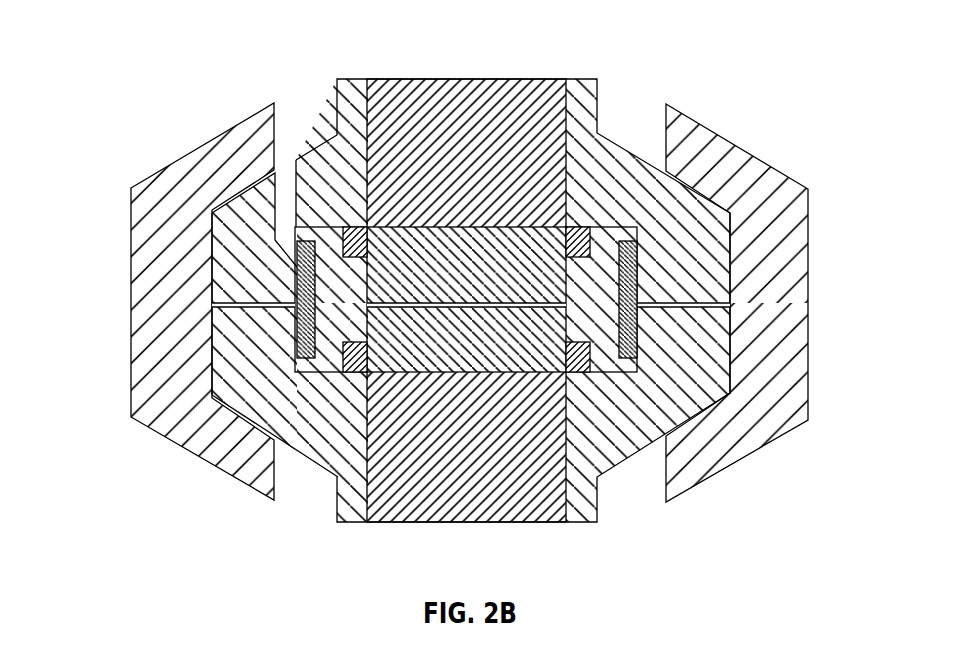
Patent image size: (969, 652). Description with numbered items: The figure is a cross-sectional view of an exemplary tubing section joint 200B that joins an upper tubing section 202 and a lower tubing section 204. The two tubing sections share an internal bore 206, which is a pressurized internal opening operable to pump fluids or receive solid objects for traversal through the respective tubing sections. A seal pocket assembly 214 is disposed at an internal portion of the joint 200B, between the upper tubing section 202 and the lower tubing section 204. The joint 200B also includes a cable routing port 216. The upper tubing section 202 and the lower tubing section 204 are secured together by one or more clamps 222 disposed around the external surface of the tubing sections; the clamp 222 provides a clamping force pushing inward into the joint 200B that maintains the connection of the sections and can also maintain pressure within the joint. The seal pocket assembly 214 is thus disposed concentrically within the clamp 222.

The tubing section joint 200B is at (127, 111).
The upper tubing section 202 is at (700, 210).
The lower tubing section 204 is at (222, 355).
The internal bore 206 is at (482, 95).
The seal pocket assembly 214 is at (600, 232).
The cable routing port 216 is at (285, 170).
The clamp 222 is at (131, 272).